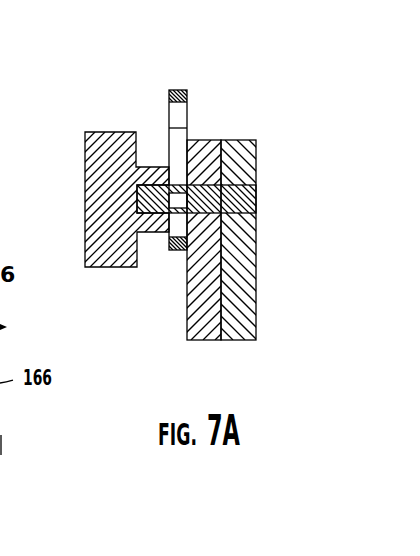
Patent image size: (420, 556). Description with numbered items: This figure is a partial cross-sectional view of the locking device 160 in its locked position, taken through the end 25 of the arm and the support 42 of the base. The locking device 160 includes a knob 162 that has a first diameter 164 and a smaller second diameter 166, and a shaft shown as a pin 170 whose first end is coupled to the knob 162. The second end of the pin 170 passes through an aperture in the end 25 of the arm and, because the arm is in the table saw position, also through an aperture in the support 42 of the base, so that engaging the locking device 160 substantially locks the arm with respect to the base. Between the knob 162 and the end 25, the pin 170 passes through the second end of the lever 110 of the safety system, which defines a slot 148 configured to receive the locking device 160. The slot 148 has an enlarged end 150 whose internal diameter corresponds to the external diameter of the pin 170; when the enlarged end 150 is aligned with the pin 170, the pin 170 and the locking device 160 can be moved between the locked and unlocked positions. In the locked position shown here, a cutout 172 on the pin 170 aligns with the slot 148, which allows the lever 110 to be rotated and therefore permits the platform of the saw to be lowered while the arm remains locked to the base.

The lever 110 is at (188, 68).
The slot 148 is at (169, 142).
The enlarged end 150 is at (185, 117).
The locking device 160 is at (68, 118).
The knob 162 is at (85, 170).
The first diameter 164 is at (103, 131).
The second diameter 166 is at (148, 232).
The pin 170 is at (252, 198).
The cutout 172 is at (170, 200).
The end 25 is at (195, 330).
The support 42 is at (235, 340).